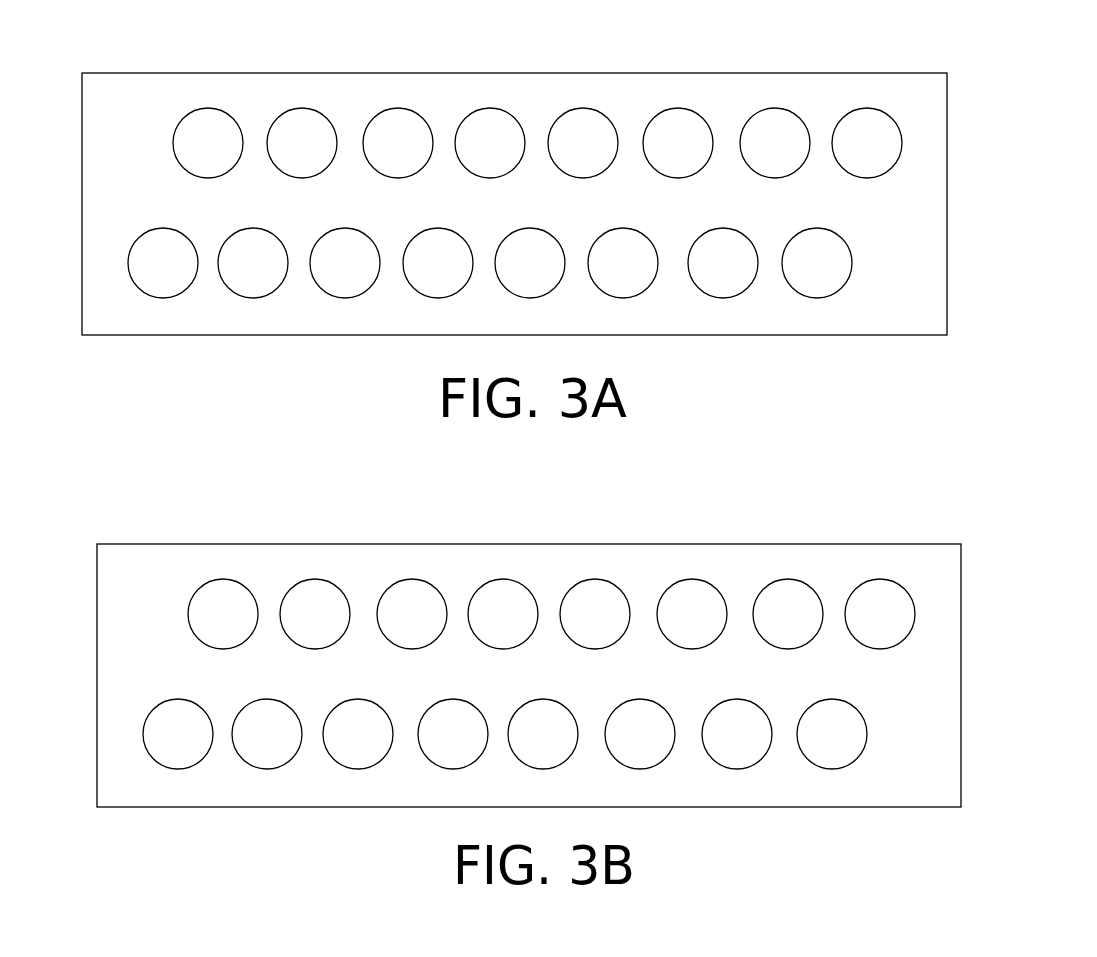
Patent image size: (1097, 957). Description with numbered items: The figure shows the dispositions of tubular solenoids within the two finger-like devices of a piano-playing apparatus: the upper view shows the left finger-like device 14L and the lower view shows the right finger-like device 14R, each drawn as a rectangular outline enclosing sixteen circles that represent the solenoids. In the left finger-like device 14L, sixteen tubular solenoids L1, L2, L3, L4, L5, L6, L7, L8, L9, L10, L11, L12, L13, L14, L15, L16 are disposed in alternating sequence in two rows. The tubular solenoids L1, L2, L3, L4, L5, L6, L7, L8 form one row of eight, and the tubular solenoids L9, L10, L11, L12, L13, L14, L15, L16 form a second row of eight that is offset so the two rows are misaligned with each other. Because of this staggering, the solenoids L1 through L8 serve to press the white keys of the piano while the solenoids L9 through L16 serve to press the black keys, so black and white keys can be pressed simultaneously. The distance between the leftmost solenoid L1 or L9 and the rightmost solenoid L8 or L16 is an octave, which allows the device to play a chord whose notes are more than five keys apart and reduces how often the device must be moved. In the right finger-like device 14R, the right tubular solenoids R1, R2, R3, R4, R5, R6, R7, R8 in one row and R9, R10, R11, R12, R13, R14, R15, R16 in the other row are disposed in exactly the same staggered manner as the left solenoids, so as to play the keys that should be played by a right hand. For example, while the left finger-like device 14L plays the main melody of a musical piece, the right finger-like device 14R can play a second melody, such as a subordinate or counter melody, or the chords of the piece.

In FIG. 3A, the left finger-like device 14L is at (947, 125).
In FIG. 3B, the right finger-like device 14R is at (950, 540).
In FIG. 3A, the tubular solenoid L1 is at (208, 143).
In FIG. 3A, the tubular solenoid L2 is at (302, 143).
In FIG. 3A, the tubular solenoid L3 is at (398, 143).
In FIG. 3A, the tubular solenoid L4 is at (490, 143).
In FIG. 3A, the tubular solenoid L5 is at (583, 143).
In FIG. 3A, the tubular solenoid L6 is at (678, 143).
In FIG. 3A, the tubular solenoid L7 is at (775, 143).
In FIG. 3A, the tubular solenoid L8 is at (867, 143).
In FIG. 3A, the tubular solenoid L9 is at (163, 263).
In FIG. 3A, the tubular solenoid L10 is at (253, 263).
In FIG. 3A, the tubular solenoid L11 is at (345, 263).
In FIG. 3A, the tubular solenoid L12 is at (438, 263).
In FIG. 3A, the tubular solenoid L13 is at (530, 263).
In FIG. 3A, the tubular solenoid L14 is at (623, 263).
In FIG. 3A, the tubular solenoid L15 is at (723, 263).
In FIG. 3A, the tubular solenoid L16 is at (817, 263).
In FIG. 3B, the right tubular solenoid R1 is at (223, 614).
In FIG. 3B, the right tubular solenoid R2 is at (315, 614).
In FIG. 3B, the right tubular solenoid R3 is at (412, 614).
In FIG. 3B, the right tubular solenoid R4 is at (503, 614).
In FIG. 3B, the right tubular solenoid R5 is at (595, 614).
In FIG. 3B, the right tubular solenoid R6 is at (692, 614).
In FIG. 3B, the right tubular solenoid R7 is at (788, 614).
In FIG. 3B, the right tubular solenoid R8 is at (880, 614).
In FIG. 3B, the right tubular solenoid R9 is at (178, 734).
In FIG. 3B, the right tubular solenoid R10 is at (267, 734).
In FIG. 3B, the right tubular solenoid R11 is at (358, 734).
In FIG. 3B, the right tubular solenoid R12 is at (453, 734).
In FIG. 3B, the right tubular solenoid R13 is at (543, 734).
In FIG. 3B, the right tubular solenoid R14 is at (640, 734).
In FIG. 3B, the right tubular solenoid R15 is at (737, 734).
In FIG. 3B, the right tubular solenoid R16 is at (832, 734).